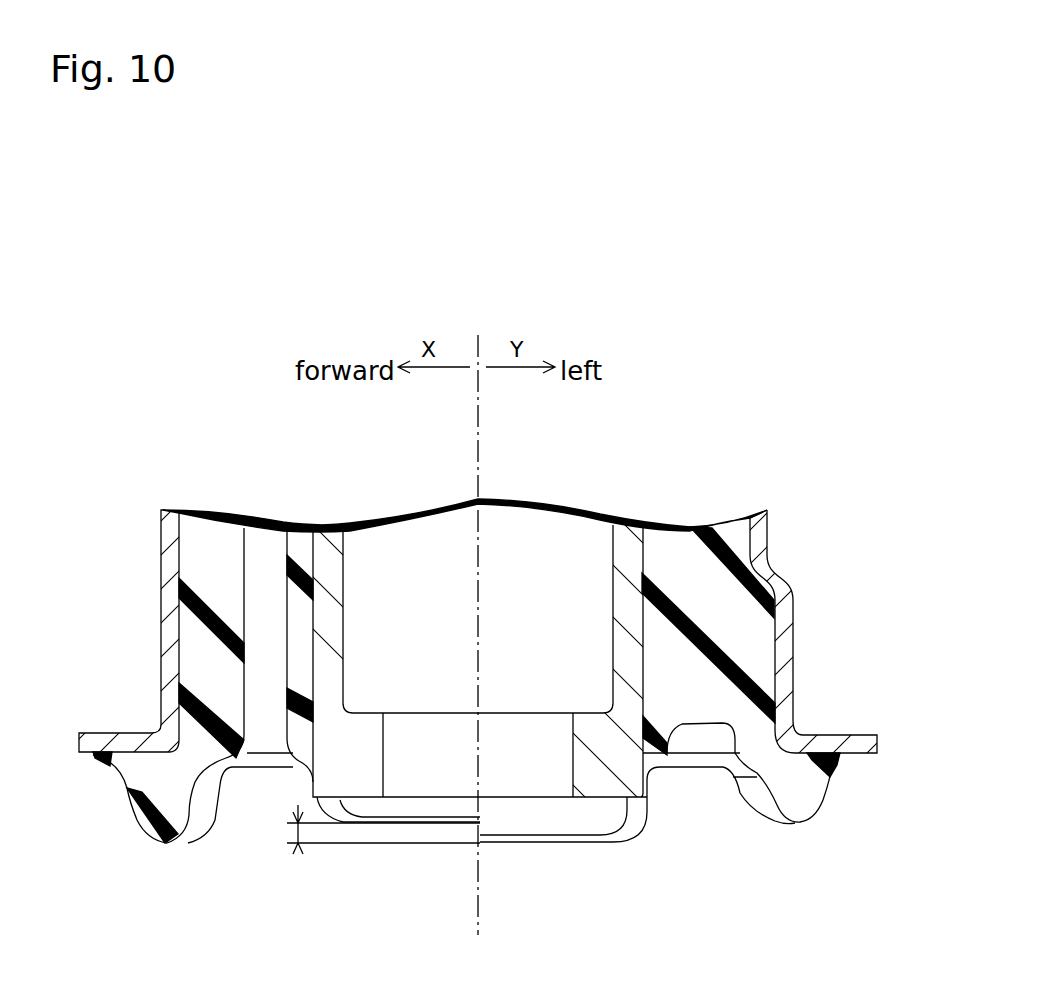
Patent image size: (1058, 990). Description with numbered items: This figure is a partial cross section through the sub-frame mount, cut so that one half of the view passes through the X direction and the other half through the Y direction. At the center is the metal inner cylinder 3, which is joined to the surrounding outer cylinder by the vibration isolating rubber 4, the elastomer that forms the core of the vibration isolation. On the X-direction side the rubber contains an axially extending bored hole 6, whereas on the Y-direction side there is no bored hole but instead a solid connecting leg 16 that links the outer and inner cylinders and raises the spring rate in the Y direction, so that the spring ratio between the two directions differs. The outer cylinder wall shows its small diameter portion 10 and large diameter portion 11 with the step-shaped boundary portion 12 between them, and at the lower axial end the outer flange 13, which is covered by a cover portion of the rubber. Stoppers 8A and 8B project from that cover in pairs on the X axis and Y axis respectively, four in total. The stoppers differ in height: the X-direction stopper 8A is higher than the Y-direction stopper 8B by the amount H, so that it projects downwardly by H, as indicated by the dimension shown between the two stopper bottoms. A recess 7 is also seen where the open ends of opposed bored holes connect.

The inner cylinder 3 is at (337, 583).
The vibration isolating rubber 4 is at (192, 627).
The bored hole 6 is at (271, 600).
The recess 7 is at (699, 742).
The stopper 8A is at (158, 802).
The stopper 8B is at (431, 802).
The small diameter portion 10 is at (768, 540).
The large diameter portion 11 is at (163, 692).
The boundary portion 12 is at (780, 568).
The outer flange 13 is at (79, 745).
The connecting leg 16 is at (706, 570).
The height difference H is at (298, 845).